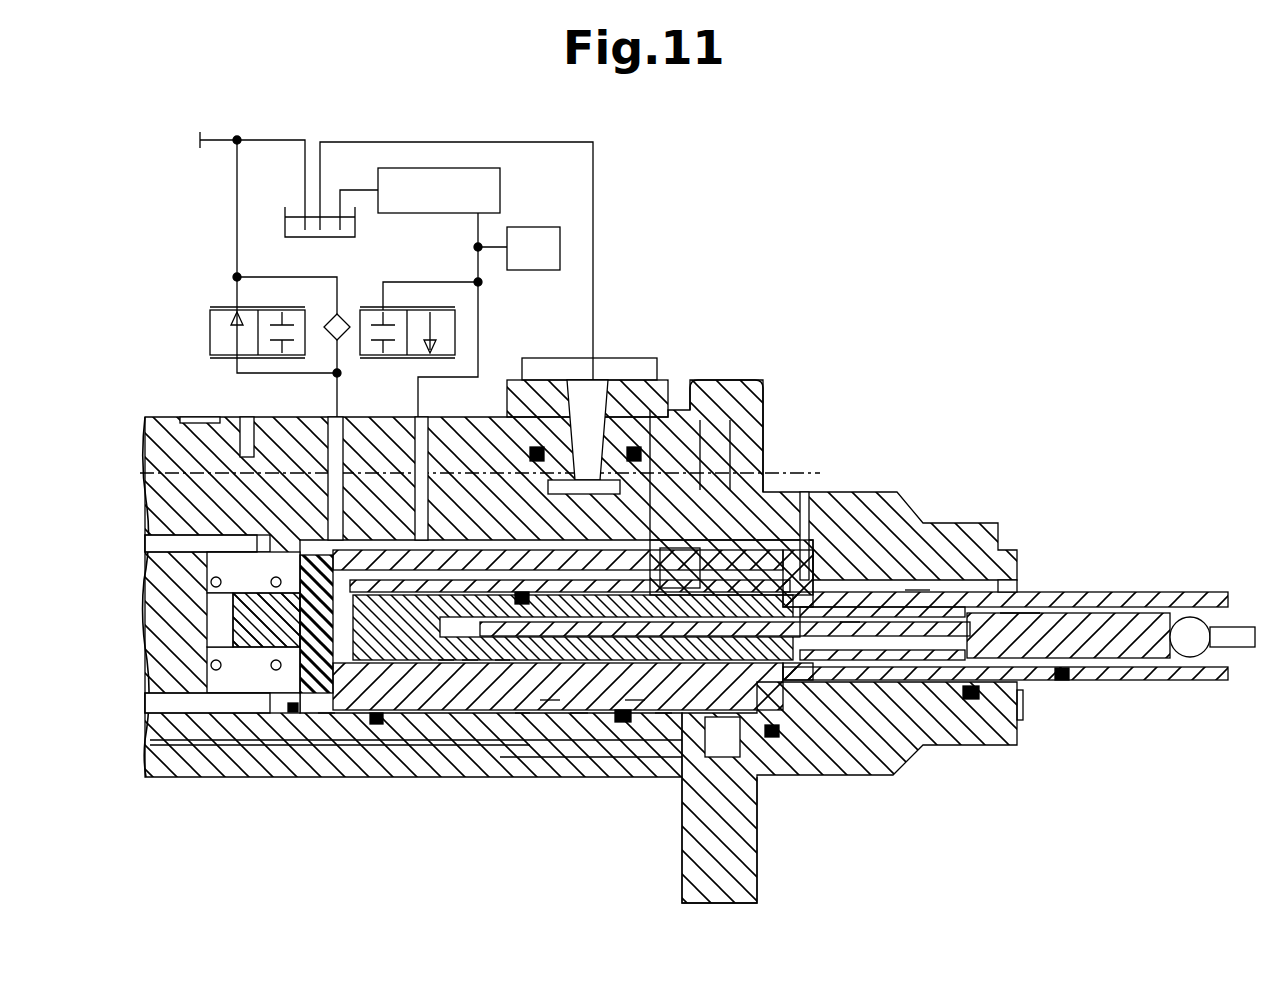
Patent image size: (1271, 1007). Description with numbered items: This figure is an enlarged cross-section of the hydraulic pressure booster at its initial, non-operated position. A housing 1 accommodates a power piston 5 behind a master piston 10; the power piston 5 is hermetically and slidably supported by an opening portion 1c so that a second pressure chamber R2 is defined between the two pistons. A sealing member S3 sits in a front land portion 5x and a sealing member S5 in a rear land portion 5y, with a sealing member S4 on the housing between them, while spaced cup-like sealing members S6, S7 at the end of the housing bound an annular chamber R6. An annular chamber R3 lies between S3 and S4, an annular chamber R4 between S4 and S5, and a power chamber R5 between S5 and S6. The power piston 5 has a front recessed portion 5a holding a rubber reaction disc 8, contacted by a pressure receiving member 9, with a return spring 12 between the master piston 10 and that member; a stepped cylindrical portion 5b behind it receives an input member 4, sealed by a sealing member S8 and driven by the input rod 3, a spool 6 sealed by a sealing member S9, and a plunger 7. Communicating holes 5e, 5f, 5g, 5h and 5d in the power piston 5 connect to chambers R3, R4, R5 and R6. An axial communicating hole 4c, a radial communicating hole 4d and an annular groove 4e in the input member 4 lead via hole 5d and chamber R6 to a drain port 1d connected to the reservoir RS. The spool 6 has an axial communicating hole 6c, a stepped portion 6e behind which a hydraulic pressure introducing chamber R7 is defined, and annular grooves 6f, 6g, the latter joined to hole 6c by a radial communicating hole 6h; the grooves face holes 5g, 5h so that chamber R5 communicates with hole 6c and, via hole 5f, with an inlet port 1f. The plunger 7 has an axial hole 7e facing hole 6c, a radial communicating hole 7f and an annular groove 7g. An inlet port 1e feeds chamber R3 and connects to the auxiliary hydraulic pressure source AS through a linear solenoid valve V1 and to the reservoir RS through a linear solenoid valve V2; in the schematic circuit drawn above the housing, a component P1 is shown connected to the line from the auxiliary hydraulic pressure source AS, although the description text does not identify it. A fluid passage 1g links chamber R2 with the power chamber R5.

The housing 1 is at (150, 486).
The opening portion 1c is at (1027, 684).
The drain port 1d is at (822, 505).
The inlet port 1e is at (330, 413).
The inlet port 1f is at (428, 413).
The fluid passage 1g is at (150, 770).
The input rod 3 is at (1240, 652).
The input member 4 is at (825, 665).
The communicating hole 4c is at (855, 700).
The communicating hole 4d is at (1047, 607).
The annular groove 4e is at (1013, 587).
The power piston 5 is at (700, 668).
The recessed portion 5a is at (300, 760).
The cylindrical portion 5b is at (1143, 681).
The communicating hole 5d is at (945, 590).
The communicating hole 5e is at (245, 430).
The communicating hole 5f is at (590, 470).
The communicating hole 5g is at (715, 520).
The communicating hole 5h is at (763, 455).
The land portion 5x is at (207, 775).
The land portion 5y is at (665, 520).
The spool 6 is at (533, 378).
The communicating hole 6c is at (760, 520).
The stepped portion 6e is at (548, 760).
The annular groove 6f is at (635, 775).
The annular groove 6g is at (752, 815).
The communicating hole 6h is at (765, 758).
The plunger 7 is at (576, 724).
The hole 7e is at (500, 745).
The communicating hole 7f is at (468, 780).
The annular groove 7g is at (445, 760).
The reaction disc 8 is at (163, 655).
The pressure receiving member 9 is at (165, 620).
The master piston 10 is at (143, 573).
The return spring 12 is at (178, 425).
The second pressure chamber R2 is at (170, 703).
The annular chamber R3 is at (322, 740).
The annular chamber R4 is at (522, 760).
The power chamber R5 is at (663, 755).
The annular chamber R6 is at (917, 585).
The hydraulic pressure introducing chamber R7 is at (578, 775).
The sealing member S3 is at (262, 735).
The sealing member S4 is at (378, 726).
The sealing member S5 is at (618, 724).
The sealing member S6 is at (795, 765).
The sealing member S7 is at (980, 746).
The sealing member S8 is at (1062, 681).
The sealing member S9 is at (520, 590).
The linear solenoid valve V1 is at (400, 360).
The linear solenoid valve V2 is at (210, 322).
The auxiliary hydraulic pressure source AS is at (439, 190).
The pressure sensor P1 is at (533, 248).
The reservoir RS is at (313, 237).